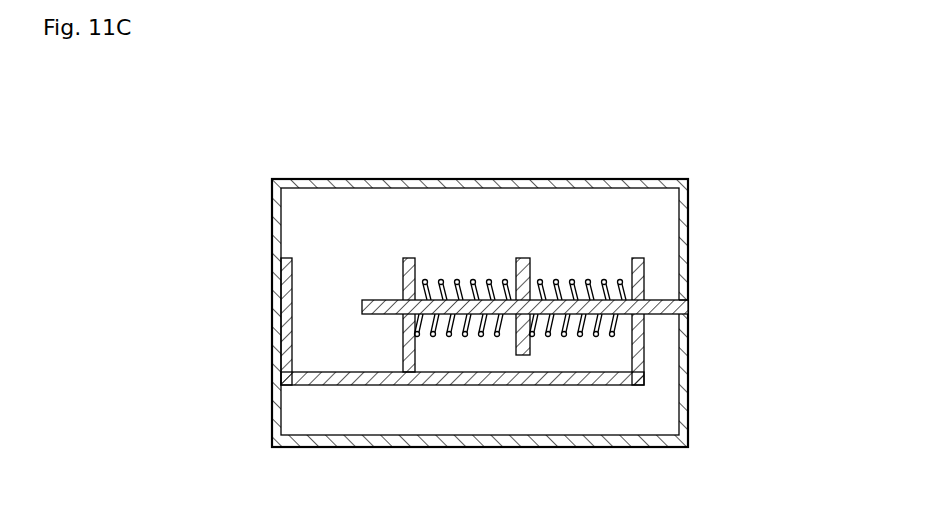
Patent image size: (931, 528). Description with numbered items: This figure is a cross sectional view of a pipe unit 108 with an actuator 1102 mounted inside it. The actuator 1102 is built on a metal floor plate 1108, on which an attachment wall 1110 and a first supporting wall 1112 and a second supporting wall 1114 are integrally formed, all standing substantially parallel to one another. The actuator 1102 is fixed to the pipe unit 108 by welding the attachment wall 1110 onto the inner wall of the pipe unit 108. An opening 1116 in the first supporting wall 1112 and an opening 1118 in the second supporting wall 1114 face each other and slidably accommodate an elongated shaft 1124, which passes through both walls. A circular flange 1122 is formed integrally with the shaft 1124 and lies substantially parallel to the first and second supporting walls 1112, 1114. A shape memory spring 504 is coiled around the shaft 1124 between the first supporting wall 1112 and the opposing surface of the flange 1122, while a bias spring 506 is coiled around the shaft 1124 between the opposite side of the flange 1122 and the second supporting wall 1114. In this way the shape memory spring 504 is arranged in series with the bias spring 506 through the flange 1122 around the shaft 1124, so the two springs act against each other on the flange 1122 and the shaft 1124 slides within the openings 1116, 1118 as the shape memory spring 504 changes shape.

The pipe unit 108 is at (673, 179).
The shape memory spring 504 is at (457, 279).
The bias spring 506 is at (560, 279).
The actuator 1102 is at (607, 226).
The metal floor plate 1108 is at (437, 368).
The attachment wall 1110 is at (287, 283).
The first supporting wall 1112 is at (407, 258).
The second supporting wall 1114 is at (645, 277).
The opening 1116 is at (403, 315).
The opening 1118 is at (678, 302).
The circular flange 1122 is at (523, 258).
The elongated shaft 1124 is at (663, 315).